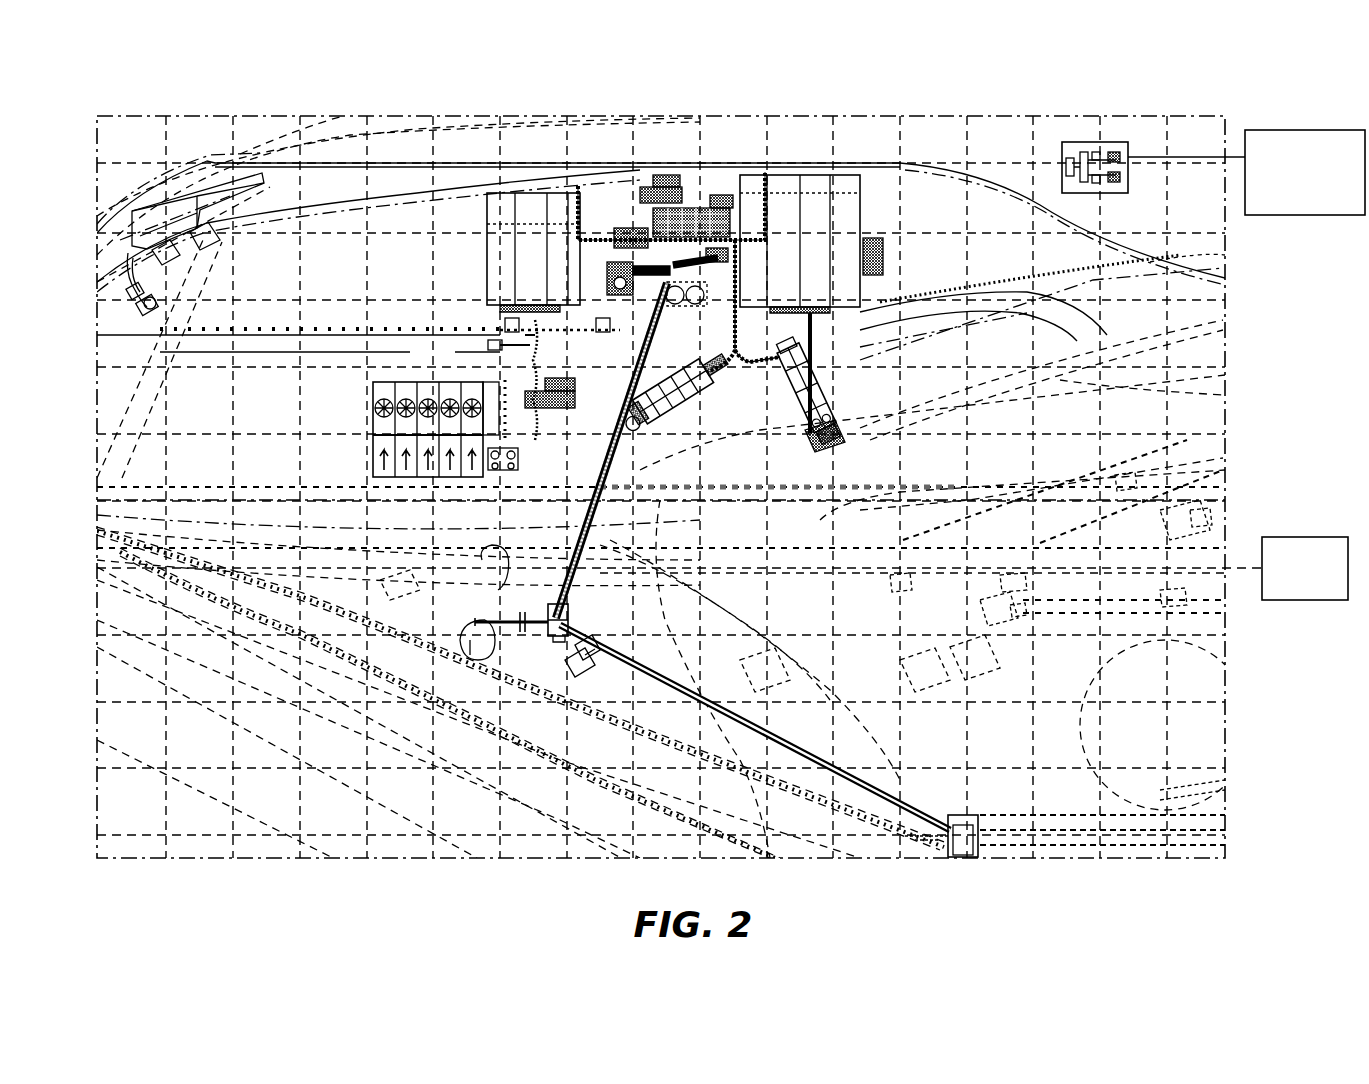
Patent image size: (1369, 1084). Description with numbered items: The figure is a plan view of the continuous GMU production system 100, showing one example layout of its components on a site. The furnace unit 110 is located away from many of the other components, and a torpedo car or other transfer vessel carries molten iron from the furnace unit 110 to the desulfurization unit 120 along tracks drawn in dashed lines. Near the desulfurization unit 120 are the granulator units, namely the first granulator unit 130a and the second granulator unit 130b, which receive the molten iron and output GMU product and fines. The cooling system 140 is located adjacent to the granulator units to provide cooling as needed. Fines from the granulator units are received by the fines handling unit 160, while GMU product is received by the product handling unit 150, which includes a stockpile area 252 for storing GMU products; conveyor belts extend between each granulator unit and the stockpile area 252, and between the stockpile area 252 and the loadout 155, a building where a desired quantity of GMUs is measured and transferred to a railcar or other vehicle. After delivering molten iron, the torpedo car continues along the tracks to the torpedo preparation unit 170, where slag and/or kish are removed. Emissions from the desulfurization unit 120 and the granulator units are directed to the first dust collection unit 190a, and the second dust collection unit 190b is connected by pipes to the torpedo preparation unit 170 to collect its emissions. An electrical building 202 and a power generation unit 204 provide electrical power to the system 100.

The continuous GMU production system 100 is at (104, 88).
The furnace unit 110 is at (1305, 601).
The desulfurization unit 120 is at (832, 411).
The first granulator unit 130a is at (773, 265).
The second granulator unit 130b is at (516, 265).
The cooling system 140 is at (450, 367).
The product handling unit 150 is at (712, 568).
The loadout 155 is at (942, 807).
The fines handling unit 160 is at (668, 333).
The torpedo preparation unit 170 is at (222, 265).
The first dust collection unit 190a is at (659, 447).
The second dust collection unit 190b is at (150, 353).
The electrical building 202 is at (1105, 141).
The power generation unit 204 is at (1305, 216).
The stockpile area 252 is at (543, 620).